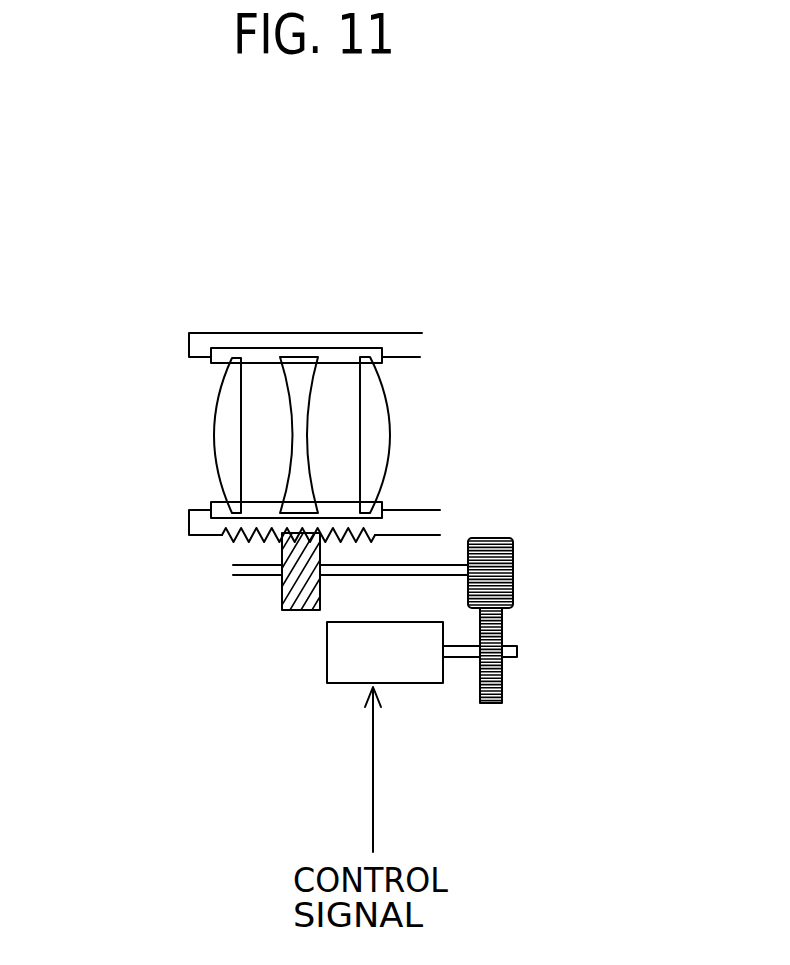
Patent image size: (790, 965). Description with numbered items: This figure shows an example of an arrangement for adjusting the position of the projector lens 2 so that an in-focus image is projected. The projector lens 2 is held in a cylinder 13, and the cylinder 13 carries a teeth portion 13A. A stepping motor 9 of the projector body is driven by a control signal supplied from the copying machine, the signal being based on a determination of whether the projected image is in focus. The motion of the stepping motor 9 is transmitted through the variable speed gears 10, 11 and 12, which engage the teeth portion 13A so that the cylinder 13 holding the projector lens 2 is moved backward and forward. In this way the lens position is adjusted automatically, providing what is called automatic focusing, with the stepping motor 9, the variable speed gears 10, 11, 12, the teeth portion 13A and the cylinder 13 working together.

The projector lens 2 is at (345, 422).
The stepping motor 9 is at (415, 683).
The variable speed gear 10 is at (502, 692).
The variable speed gear 11 is at (515, 550).
The variable speed gear 12 is at (280, 598).
The cylinder 13 is at (287, 330).
The teeth portion 13A is at (230, 550).